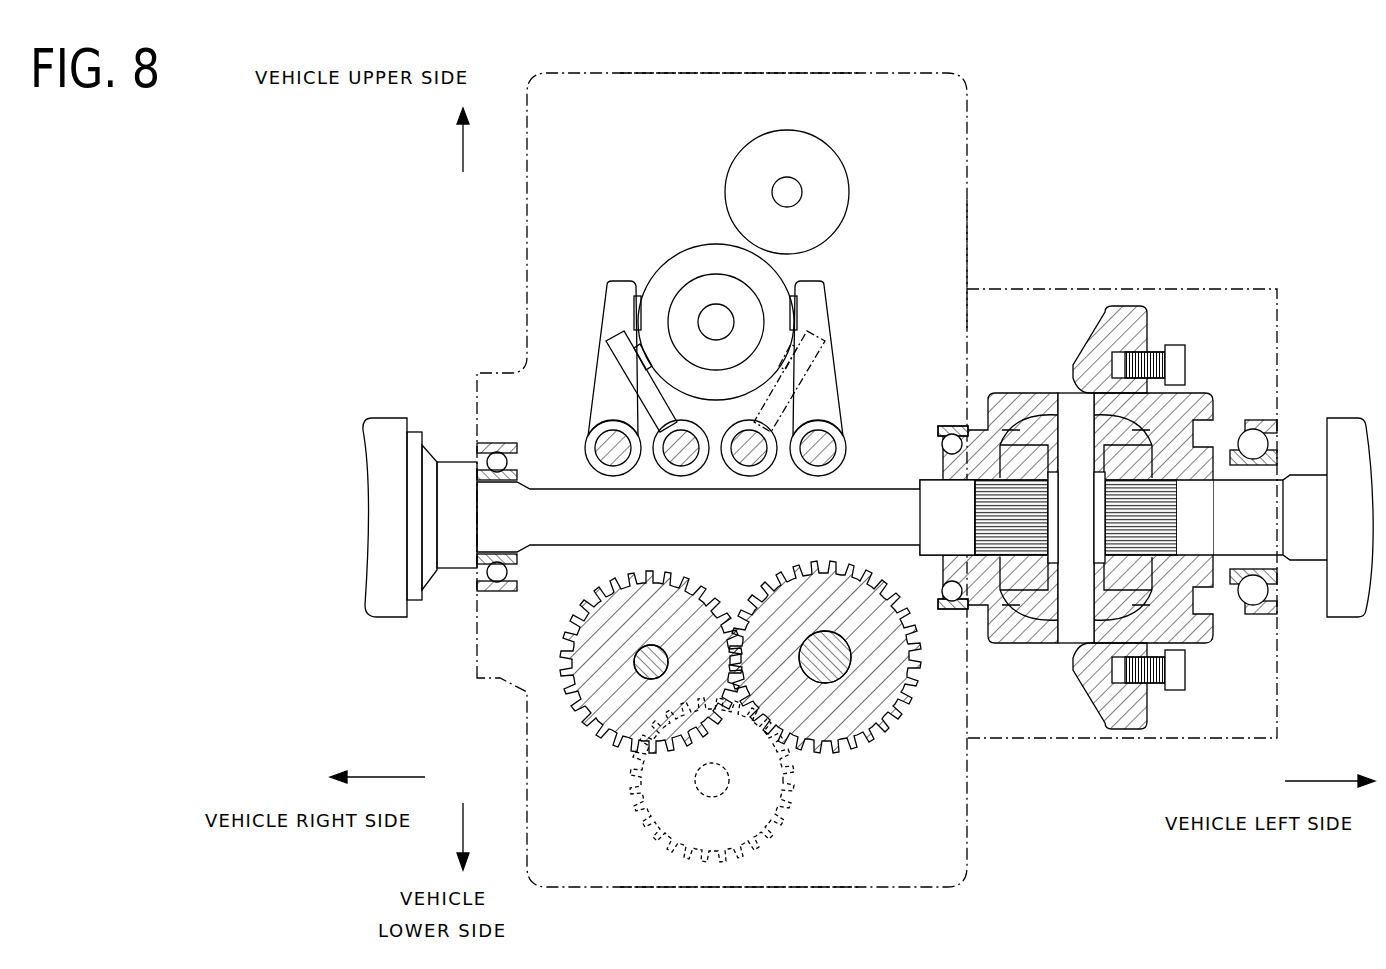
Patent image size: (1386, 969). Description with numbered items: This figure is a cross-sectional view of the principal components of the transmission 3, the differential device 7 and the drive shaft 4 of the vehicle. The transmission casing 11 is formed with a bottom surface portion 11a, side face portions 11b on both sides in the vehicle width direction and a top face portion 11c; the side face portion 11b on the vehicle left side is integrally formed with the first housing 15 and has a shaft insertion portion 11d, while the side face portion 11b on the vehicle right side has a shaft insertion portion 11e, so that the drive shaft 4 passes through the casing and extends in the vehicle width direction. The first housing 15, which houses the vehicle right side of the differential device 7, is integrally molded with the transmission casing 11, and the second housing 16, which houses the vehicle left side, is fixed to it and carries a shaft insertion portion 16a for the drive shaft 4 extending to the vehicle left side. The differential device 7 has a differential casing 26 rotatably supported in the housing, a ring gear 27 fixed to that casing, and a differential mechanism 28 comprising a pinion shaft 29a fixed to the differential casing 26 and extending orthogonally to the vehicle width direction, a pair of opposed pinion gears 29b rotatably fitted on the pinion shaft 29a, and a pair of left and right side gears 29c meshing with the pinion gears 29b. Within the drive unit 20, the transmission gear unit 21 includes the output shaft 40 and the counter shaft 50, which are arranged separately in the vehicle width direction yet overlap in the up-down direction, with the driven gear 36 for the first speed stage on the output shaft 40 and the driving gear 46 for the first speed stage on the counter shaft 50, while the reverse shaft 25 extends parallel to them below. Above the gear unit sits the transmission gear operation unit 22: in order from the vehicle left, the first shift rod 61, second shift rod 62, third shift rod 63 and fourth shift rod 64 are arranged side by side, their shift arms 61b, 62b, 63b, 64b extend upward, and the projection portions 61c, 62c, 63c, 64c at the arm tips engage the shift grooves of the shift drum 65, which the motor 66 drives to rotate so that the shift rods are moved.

The power transmission device 3 is at (512, 318).
The wheel 4 is at (387, 418).
The differential device 7 is at (1225, 358).
The transmission casing 11 is at (527, 248).
The bottom surface portion 11a is at (795, 887).
The side face portion 11b is at (527, 278).
The top face portion 11c is at (730, 73).
The shaft insertion portion 11d is at (948, 428).
The shaft insertion portion 11e is at (485, 592).
The first housing 15 is at (1057, 738).
The second housing 16 is at (1280, 665).
The shaft insertion portion 16a is at (1278, 422).
The drive shaft unit 20 is at (520, 657).
The transmission gear unit 21 is at (535, 698).
The transmission gear operation unit 22 is at (565, 393).
The reverse shaft 25 is at (700, 795).
The differential casing 26 is at (1205, 396).
The ring gear 27 is at (1125, 306).
The differential mechanism 28 is at (1058, 665).
The pinion shaft 29a is at (1075, 395).
The pinion gear 29b is at (1020, 410).
The side gear 29c is at (975, 572).
The driven gear for the first speed stage 36 is at (582, 728).
The output shaft 40 is at (636, 680).
The driving gear for the first speed stage 46 is at (833, 755).
The counter shaft 50 is at (845, 680).
The first shift rod 61 is at (613, 470).
The shift arm 61b is at (607, 300).
The projection portion 61c is at (636, 293).
The second shift rod 62 is at (681, 470).
The shift arm 62b is at (620, 415).
The projection portion 62c is at (646, 356).
The third shift rod 63 is at (749, 470).
The shift arm 63b is at (820, 398).
The projection portion 63c is at (782, 370).
The fourth shift rod 64 is at (818, 470).
The shift arm 64b is at (832, 340).
The projection portion 64c is at (797, 288).
The shift drum 65 is at (700, 249).
The motor 66 is at (838, 162).